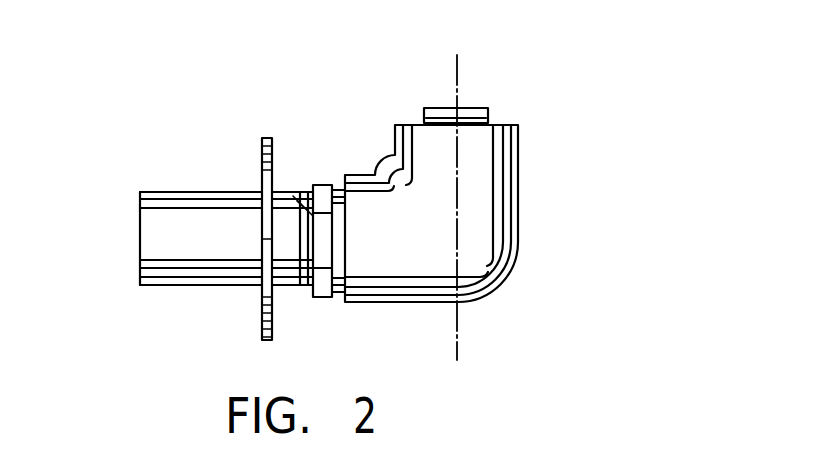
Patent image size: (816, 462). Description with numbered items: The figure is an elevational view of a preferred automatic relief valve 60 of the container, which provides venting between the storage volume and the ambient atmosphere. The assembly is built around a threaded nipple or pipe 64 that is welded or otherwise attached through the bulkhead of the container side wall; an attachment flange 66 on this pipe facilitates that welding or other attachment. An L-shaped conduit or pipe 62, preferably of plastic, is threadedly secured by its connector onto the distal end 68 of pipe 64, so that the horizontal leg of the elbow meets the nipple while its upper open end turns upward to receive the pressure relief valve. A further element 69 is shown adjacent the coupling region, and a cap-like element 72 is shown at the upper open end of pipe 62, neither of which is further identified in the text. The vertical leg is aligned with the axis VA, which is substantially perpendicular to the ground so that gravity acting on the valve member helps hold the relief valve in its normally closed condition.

The automatic relief valve 60 is at (576, 142).
The L-shaped conduit or pipe 62 is at (470, 245).
The threaded nipple or pipe 64 is at (175, 230).
The attachment flange 66 is at (267, 169).
The distal end 68 is at (290, 200).
The connector fitting 69 is at (322, 285).
The cap 72 is at (436, 111).
The axis VA is at (457, 73).